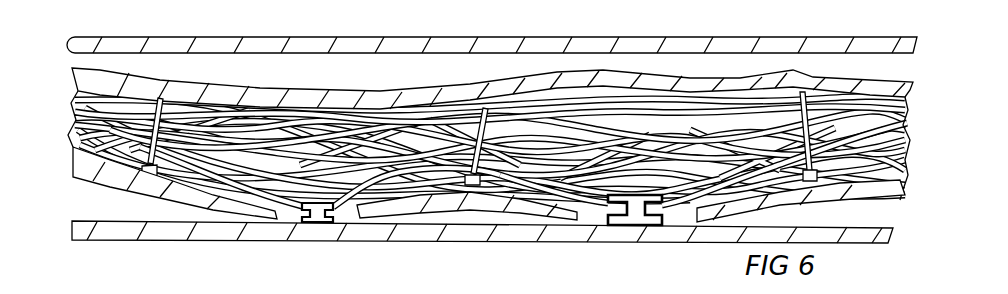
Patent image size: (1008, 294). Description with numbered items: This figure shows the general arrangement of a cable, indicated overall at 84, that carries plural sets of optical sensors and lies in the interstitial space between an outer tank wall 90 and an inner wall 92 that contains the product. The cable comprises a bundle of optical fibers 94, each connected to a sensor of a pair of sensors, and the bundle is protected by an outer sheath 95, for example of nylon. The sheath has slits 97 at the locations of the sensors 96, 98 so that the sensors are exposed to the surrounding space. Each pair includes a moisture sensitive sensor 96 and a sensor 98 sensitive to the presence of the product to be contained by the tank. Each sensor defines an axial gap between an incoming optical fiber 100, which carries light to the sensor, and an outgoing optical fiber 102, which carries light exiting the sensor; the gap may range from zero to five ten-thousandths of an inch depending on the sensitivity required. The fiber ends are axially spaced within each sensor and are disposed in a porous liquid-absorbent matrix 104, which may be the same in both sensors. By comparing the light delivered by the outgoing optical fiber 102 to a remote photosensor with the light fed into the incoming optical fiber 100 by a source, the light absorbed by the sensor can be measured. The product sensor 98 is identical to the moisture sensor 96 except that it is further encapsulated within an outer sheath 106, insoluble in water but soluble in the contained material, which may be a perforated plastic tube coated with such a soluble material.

The composite fabric assembly 84 is at (267, 88).
The outer tank wall 90 is at (522, 242).
The inner wall 92 is at (400, 45).
The optical fibers 94 is at (353, 118).
The outer sheath 95 is at (162, 90).
The moisture sensitive sensor 96 is at (337, 222).
The slits 97 is at (297, 220).
The product sensitive sensor 98 is at (628, 223).
The incoming optical fiber 100 is at (267, 200).
The outgoing optical fiber 102 is at (631, 229).
The porous liquid-absorbent matrix 104 is at (318, 222).
The outer sheath 106 is at (663, 220).